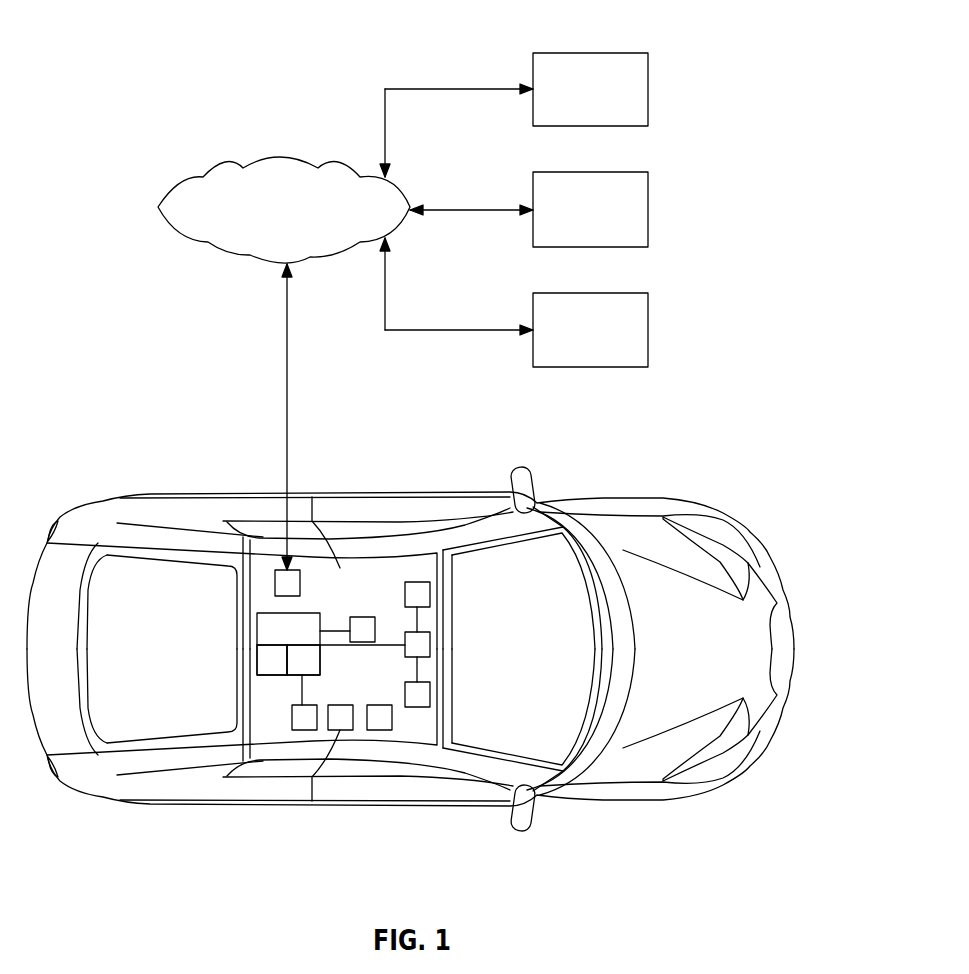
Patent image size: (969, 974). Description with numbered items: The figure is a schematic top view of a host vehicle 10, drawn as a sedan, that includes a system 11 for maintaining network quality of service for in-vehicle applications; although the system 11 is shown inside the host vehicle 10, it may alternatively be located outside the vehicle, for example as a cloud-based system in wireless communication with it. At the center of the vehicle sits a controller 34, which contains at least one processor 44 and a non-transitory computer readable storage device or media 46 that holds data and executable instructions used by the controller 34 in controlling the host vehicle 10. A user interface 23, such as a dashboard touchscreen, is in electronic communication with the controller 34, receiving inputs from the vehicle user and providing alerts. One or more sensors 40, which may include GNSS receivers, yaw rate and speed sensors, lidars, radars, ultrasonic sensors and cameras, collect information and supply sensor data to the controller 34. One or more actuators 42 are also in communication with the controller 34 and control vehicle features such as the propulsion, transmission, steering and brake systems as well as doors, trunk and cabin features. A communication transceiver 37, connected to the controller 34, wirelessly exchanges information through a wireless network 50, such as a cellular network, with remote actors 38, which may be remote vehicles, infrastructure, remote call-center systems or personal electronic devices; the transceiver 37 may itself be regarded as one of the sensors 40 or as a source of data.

The host vehicle 10 is at (637, 498).
The system for maintaining network QoS for in-vehicle applications 11 is at (333, 578).
The user interface 23 is at (363, 617).
The controller 34 is at (267, 613).
The communication transceiver 37 is at (293, 570).
The remote actor 38 is at (592, 53).
The sensors 40 is at (430, 595).
The actuators 42 is at (305, 730).
The processor 44 is at (267, 677).
The non-transitory computer readable storage device or media 46 is at (293, 677).
The wireless network 50 is at (213, 168).